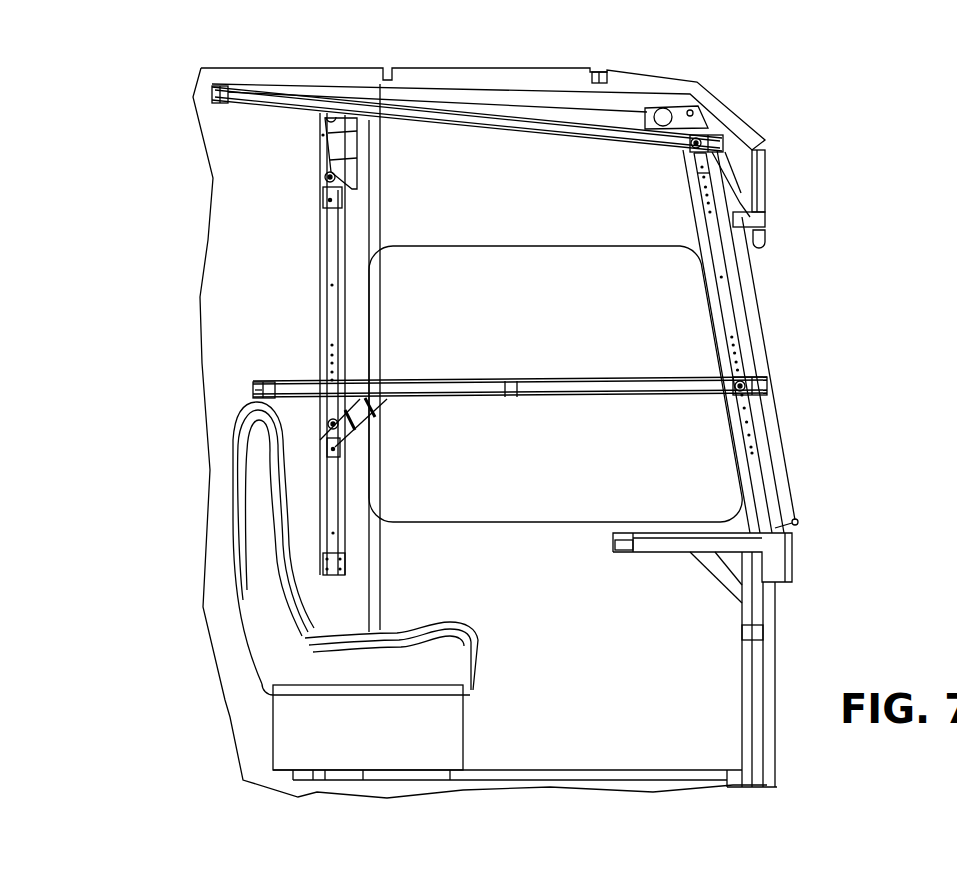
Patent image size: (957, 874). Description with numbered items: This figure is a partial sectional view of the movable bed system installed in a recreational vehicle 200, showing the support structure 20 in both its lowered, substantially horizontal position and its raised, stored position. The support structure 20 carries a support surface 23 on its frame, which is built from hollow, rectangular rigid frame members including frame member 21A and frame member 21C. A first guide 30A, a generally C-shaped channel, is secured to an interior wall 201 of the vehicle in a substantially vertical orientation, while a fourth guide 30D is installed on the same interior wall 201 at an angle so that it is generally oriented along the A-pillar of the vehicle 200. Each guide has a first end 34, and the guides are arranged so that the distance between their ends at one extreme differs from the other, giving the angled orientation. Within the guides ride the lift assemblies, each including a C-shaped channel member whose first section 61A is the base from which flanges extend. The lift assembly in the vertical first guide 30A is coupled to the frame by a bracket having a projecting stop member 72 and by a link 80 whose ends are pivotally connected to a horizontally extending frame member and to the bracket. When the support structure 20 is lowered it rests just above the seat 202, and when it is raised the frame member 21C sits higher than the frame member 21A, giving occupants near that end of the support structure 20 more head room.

The support 20 is at (500, 108).
The frame member 21A is at (726, 143).
The frame member 21C is at (227, 98).
The support surface 23 is at (543, 117).
The first guide 30A is at (320, 247).
The fourth guide 30D is at (733, 323).
The first end 34 is at (345, 570).
The first section 61A is at (707, 185).
The stop member 72 is at (330, 200).
The link 80 is at (338, 150).
The recreational vehicle 200 is at (800, 607).
The interior wall 201 is at (220, 308).
The seat 202 is at (273, 618).